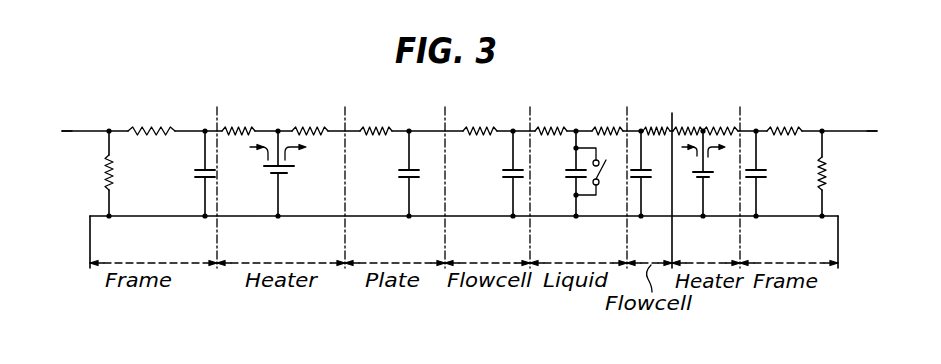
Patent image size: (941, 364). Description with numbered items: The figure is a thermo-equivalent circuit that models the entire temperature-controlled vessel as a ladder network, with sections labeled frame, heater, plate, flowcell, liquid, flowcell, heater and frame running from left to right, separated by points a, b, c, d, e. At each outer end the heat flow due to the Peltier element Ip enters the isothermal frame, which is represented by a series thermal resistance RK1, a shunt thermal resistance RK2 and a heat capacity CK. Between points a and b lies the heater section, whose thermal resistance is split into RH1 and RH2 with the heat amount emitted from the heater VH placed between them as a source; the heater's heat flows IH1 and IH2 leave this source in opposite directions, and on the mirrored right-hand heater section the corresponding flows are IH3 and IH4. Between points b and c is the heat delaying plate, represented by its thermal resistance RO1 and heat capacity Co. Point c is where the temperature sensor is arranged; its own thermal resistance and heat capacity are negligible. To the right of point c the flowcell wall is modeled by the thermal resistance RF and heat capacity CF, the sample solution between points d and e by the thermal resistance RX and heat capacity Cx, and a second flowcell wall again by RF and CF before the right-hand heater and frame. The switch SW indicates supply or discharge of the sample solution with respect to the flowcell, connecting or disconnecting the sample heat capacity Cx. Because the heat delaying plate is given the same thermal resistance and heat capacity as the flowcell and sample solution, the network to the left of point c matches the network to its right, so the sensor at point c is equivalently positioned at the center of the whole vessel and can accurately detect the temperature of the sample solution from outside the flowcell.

The point a is at (215, 172).
The point b is at (346, 172).
The point c is at (444, 172).
The point d is at (529, 172).
The point e is at (626, 172).
The heat flow due to Peltier element Ip is at (92, 124).
The thermal resistance of isothermal frame RK1 is at (465, 120).
The thermal resistance of isothermal frame RK2 is at (460, 173).
The heat capacity of isothermal frame CK is at (479, 176).
The thermal resistance of heater RH1 is at (722, 129).
The thermal resistance of heater RH2 is at (499, 121).
The heat amount emitted from heater VH is at (497, 184).
The heat flow due to heater IH1 is at (244, 160).
The heat flow due to heater IH2 is at (306, 160).
The heat flow due to heater IH3 is at (690, 156).
The heat flow due to heater IH4 is at (720, 156).
The thermal resistance of heat delaying plate RO1 is at (376, 121).
The heat capacity of heat delaying plate Co is at (397, 173).
The thermal resistance of the wall of flowcell RF is at (566, 121).
The heat capacity of the wall of flowcell CF is at (570, 182).
The thermal resistance of sample solution RX is at (579, 121).
The heat capacity of sample solution Cx is at (560, 173).
The switch SW is at (598, 183).